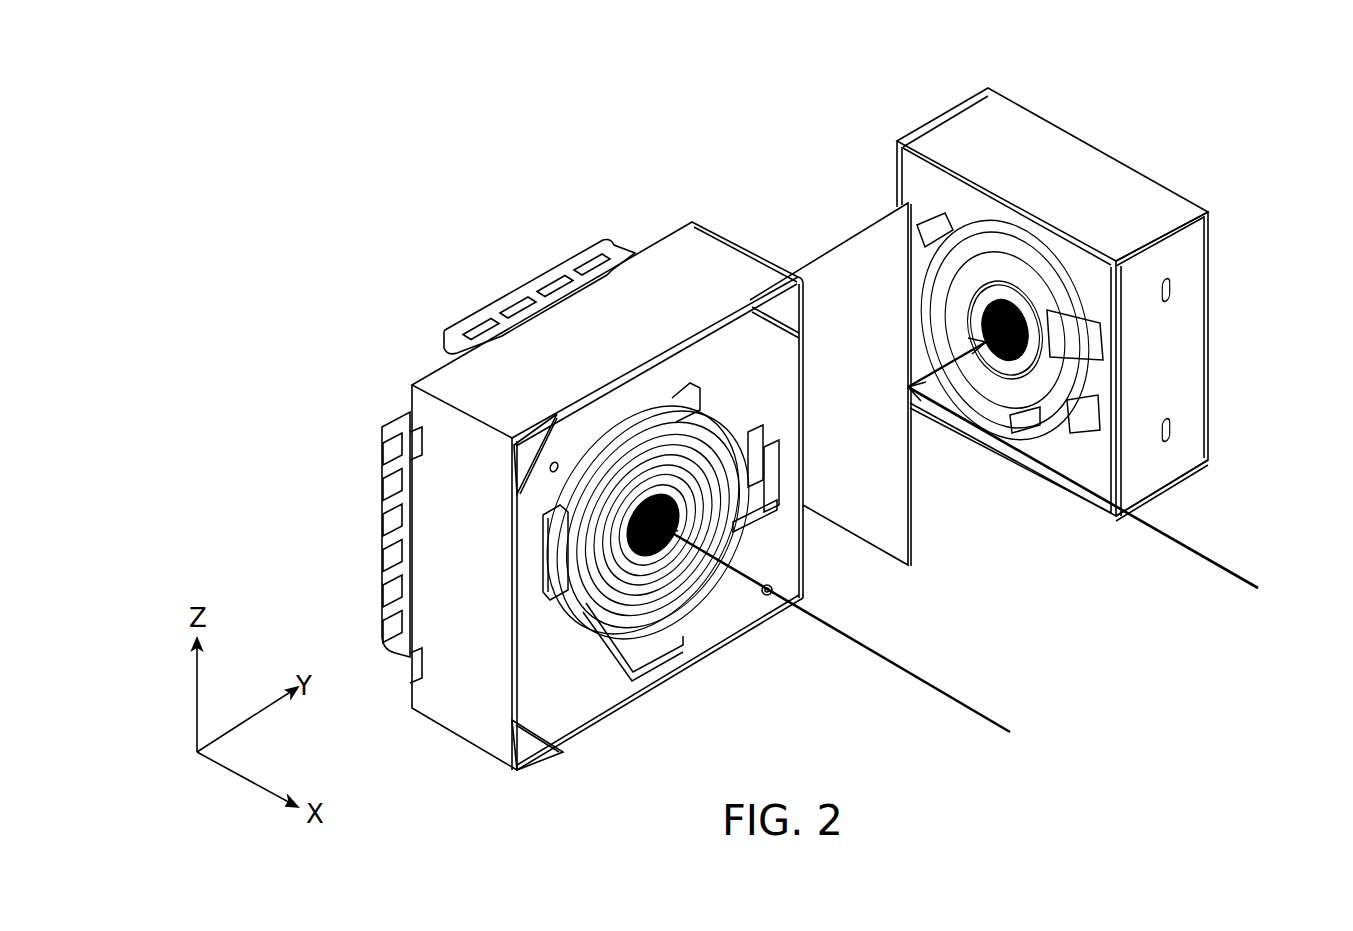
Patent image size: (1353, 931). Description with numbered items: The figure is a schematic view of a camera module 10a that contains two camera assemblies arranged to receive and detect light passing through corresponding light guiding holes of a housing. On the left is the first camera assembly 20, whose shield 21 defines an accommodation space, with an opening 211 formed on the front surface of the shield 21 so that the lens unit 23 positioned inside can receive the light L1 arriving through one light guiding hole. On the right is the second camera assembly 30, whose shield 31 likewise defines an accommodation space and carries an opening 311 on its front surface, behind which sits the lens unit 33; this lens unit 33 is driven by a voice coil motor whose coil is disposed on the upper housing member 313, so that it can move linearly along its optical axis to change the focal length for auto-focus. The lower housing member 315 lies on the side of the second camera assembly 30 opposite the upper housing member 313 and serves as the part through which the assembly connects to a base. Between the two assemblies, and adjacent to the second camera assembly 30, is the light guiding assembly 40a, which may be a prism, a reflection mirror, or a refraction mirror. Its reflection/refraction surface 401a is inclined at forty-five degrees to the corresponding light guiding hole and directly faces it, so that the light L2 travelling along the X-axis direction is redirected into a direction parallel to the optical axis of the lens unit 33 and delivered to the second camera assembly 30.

The camera module 10a is at (357, 220).
The first camera assembly 20 is at (401, 338).
The shield 21 is at (480, 722).
The opening 211 is at (628, 645).
The lens unit 23 is at (677, 598).
The second camera assembly 30 is at (925, 105).
The shield 31 is at (1027, 108).
The opening 311 is at (1012, 228).
The upper housing member 313 is at (1138, 198).
The lower housing member 315 is at (1188, 478).
The lens unit 33 is at (1018, 388).
The light guiding assembly 40a is at (807, 217).
The reflection/refraction surface 401a is at (912, 527).
The light L1 is at (859, 640).
The light L2 is at (1106, 475).